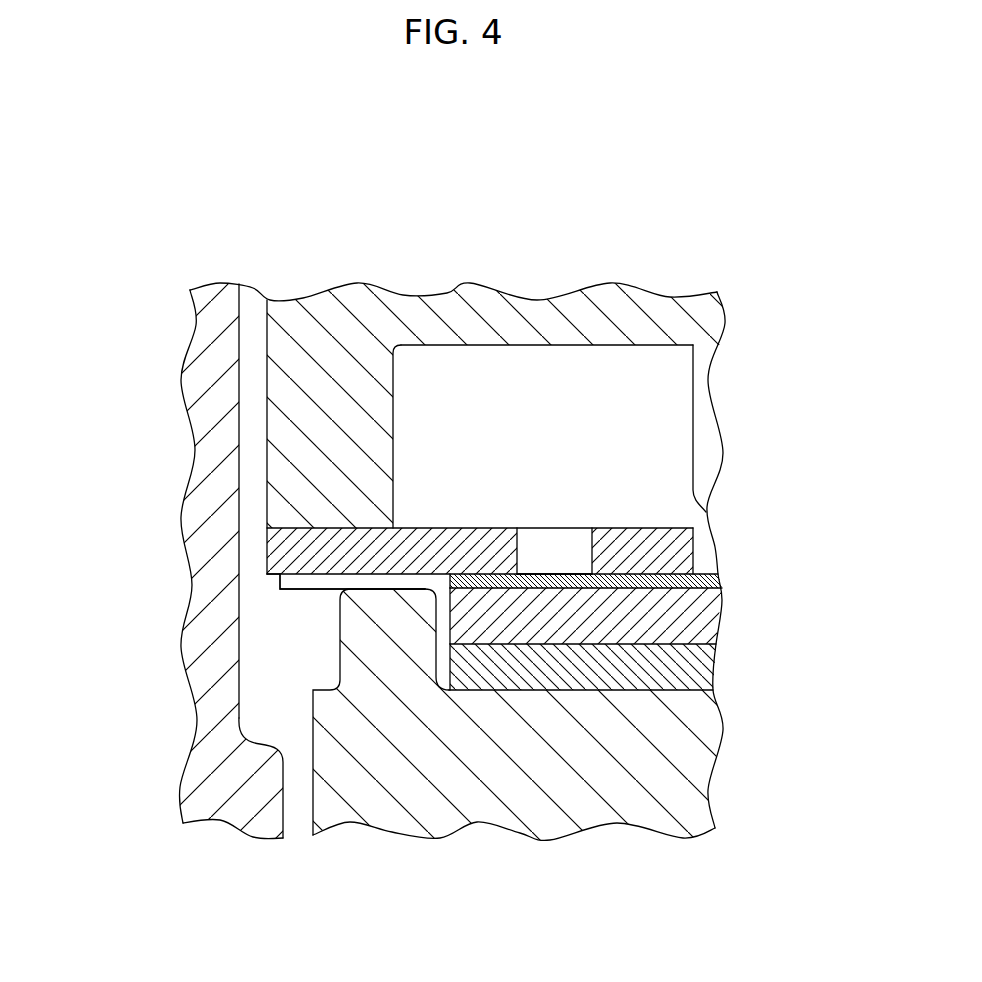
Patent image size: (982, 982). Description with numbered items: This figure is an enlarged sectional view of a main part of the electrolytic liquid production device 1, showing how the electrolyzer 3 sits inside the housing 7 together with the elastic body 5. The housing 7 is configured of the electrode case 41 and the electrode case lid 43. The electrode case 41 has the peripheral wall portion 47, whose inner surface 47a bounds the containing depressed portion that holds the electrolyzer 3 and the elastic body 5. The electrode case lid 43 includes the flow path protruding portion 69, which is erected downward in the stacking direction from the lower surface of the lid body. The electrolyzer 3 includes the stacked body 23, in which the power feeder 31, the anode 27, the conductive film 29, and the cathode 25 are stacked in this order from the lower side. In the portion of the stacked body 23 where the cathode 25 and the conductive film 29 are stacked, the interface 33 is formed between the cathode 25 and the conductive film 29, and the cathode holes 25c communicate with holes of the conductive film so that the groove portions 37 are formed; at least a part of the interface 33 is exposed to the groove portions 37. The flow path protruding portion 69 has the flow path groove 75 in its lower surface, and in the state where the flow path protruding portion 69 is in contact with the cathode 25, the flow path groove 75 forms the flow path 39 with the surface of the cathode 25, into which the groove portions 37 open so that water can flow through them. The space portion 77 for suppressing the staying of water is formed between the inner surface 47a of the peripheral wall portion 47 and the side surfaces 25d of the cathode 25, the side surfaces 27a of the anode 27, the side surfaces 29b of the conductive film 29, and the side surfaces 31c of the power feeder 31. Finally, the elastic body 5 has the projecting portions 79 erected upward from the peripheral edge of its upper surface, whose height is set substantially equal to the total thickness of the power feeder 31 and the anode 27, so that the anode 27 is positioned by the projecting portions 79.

The electrolytic liquid production device 1 is at (708, 168).
The electrolyzer 3 is at (470, 697).
The elastic body 5 is at (402, 740).
The housing 7 is at (435, 520).
The stacked body 23 is at (470, 697).
The cathode 25 is at (425, 520).
The cathode hole 25c is at (518, 545).
The side surface of cathode 25d is at (267, 552).
The anode 27 is at (485, 765).
The side surface of anode 27a is at (449, 588).
The conductive film 29 is at (464, 741).
The side surface of conductive film 29b is at (440, 590).
The power feeder 31 is at (540, 784).
The side surface of power feeder 31c is at (448, 685).
The interface 33 is at (590, 572).
The groove portion 37 is at (547, 562).
The flow path 39 is at (598, 436).
The electrode case 41 is at (435, 520).
The electrode case lid 43 is at (496, 365).
The peripheral wall portion 47 is at (175, 561).
The inner surface of peripheral wall portion 47a is at (227, 633).
The flow path protruding portion 69 is at (336, 427).
The flow path groove 75 is at (560, 345).
The space portion 77 is at (295, 600).
The projecting portion 79 is at (368, 638).